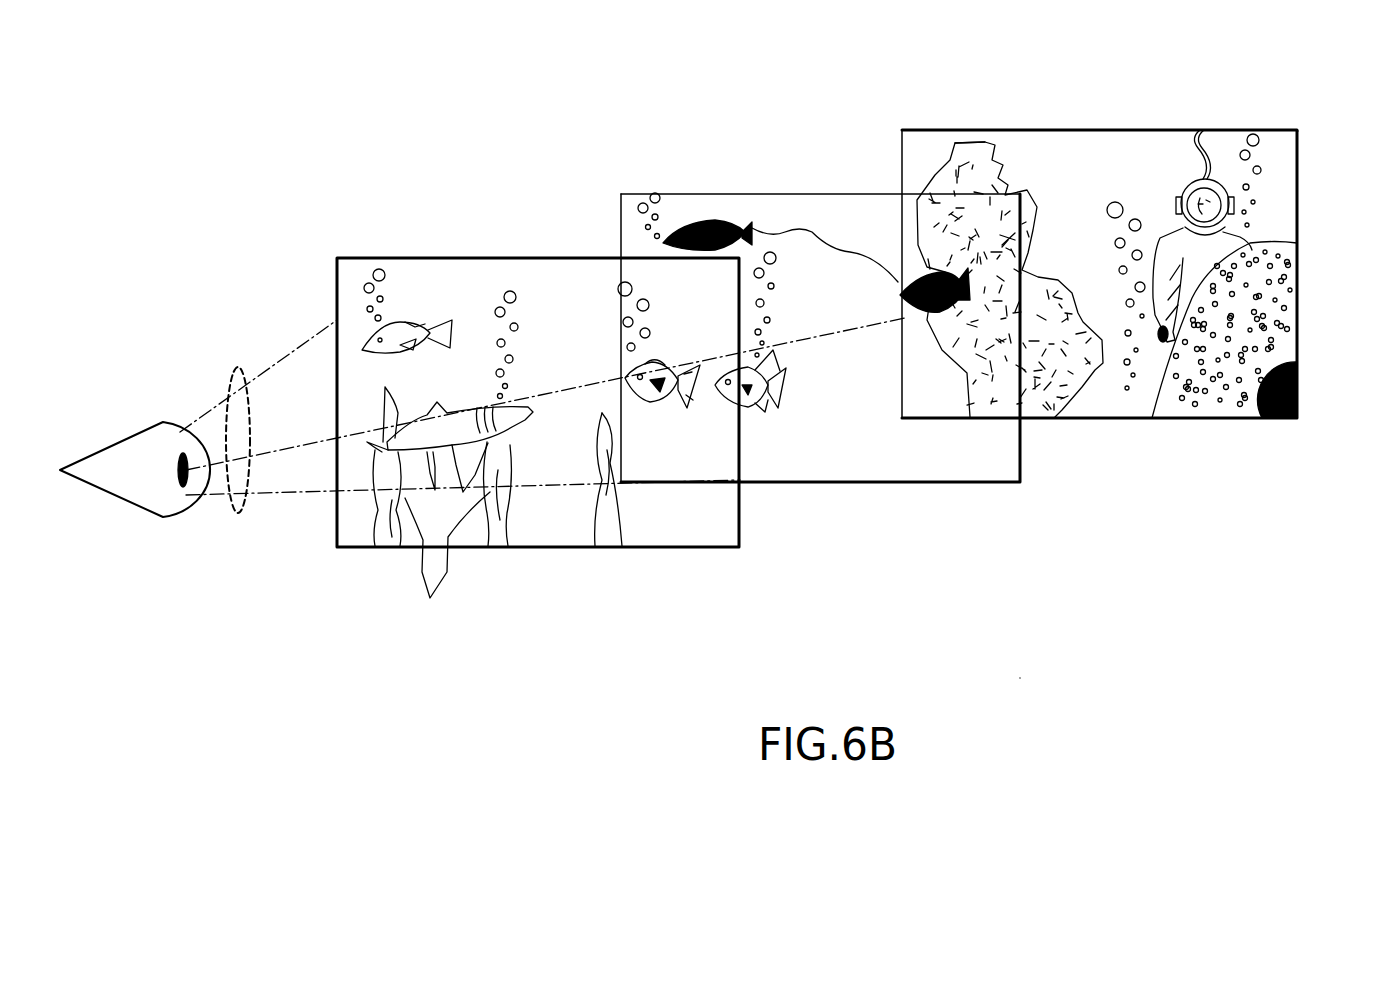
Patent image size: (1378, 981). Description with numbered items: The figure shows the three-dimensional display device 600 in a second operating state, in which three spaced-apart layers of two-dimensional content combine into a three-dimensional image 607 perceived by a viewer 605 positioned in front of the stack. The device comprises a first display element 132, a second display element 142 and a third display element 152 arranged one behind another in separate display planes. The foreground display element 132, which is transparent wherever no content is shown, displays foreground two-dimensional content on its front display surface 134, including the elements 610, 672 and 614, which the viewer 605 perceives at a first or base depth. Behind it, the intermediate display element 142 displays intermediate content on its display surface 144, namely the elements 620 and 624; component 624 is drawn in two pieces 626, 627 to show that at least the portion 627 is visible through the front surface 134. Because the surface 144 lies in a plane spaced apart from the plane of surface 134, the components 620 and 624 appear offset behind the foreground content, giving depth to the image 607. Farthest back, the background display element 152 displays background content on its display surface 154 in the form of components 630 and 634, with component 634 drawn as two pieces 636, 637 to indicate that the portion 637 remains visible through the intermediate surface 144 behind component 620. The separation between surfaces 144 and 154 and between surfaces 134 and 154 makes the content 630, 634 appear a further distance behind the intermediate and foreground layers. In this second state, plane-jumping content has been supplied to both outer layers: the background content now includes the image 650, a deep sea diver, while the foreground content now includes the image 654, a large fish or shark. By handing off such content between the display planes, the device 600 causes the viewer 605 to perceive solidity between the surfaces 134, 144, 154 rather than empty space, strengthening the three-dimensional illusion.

The 3D display device 600 is at (1023, 677).
The viewer 605 is at (118, 500).
The 3D image 607 is at (243, 513).
The first display element 132 is at (336, 258).
The front display surface 134 is at (348, 291).
The second display element 142 is at (1022, 440).
The intermediate display surface 144 is at (932, 470).
The third display element 152 is at (1298, 132).
The background display surface 154 is at (1290, 165).
The 2D element 610 is at (507, 447).
The 2D element 614 is at (617, 392).
The 2D element 620 is at (780, 243).
The 2D element 624 is at (760, 387).
The first piece of component 624 626 is at (779, 372).
The portion of component 624 627 is at (722, 398).
The background 2D component 630 is at (1281, 246).
The background 2D component 634 is at (1008, 163).
The first piece of component 634 636 is at (955, 164).
The portion of component 634 637 is at (1005, 237).
The 2D component or image 650 is at (1185, 190).
The 2D component or image 654 is at (450, 452).
The 2D element 672 is at (395, 352).